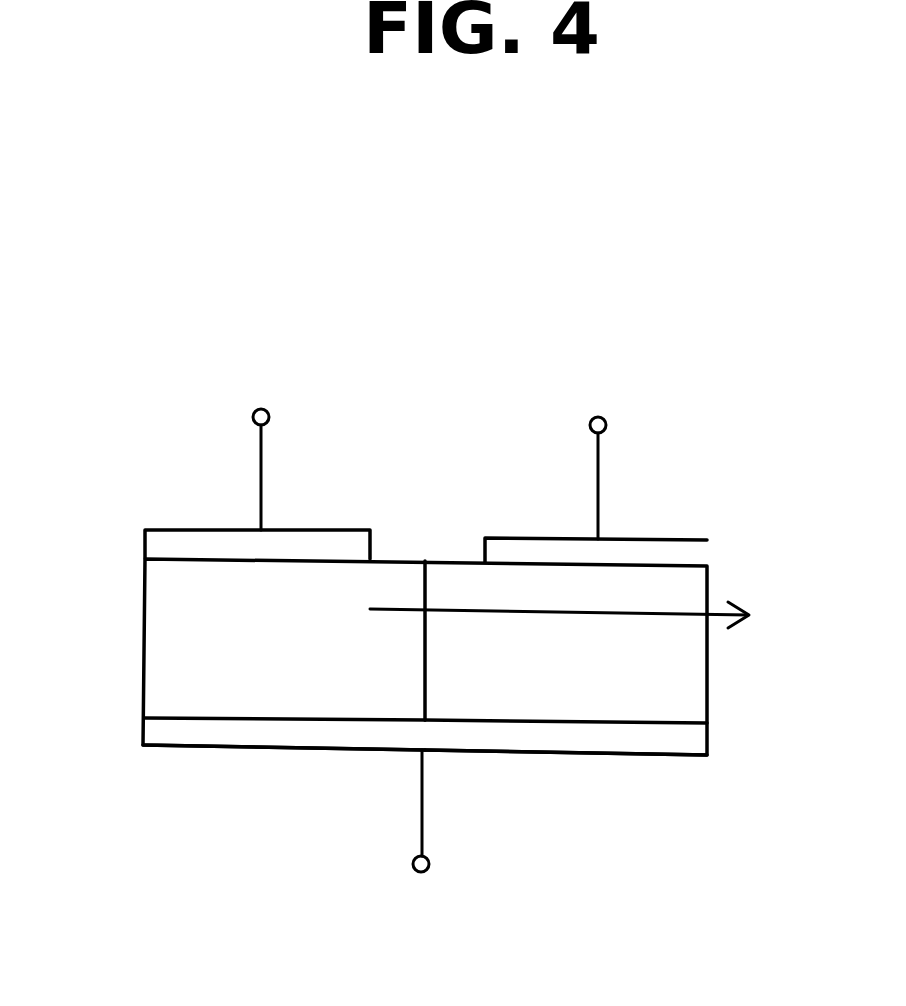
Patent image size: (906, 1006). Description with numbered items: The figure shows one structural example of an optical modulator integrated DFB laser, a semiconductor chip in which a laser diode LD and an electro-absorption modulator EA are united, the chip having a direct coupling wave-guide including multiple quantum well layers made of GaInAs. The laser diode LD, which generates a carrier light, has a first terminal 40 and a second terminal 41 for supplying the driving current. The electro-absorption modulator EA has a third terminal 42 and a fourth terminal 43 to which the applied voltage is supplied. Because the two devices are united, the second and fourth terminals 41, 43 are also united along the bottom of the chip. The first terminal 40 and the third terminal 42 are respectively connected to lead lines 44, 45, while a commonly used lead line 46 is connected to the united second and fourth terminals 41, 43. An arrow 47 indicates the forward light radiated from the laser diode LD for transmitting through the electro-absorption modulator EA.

The first terminal 40 is at (142, 533).
The second terminal 41 is at (185, 732).
The third terminal 42 is at (688, 553).
The fourth terminal 43 is at (690, 743).
The lead line 44 is at (268, 407).
The lead line 45 is at (612, 418).
The commonly used lead line 46 is at (418, 873).
The arrow 47 is at (600, 625).